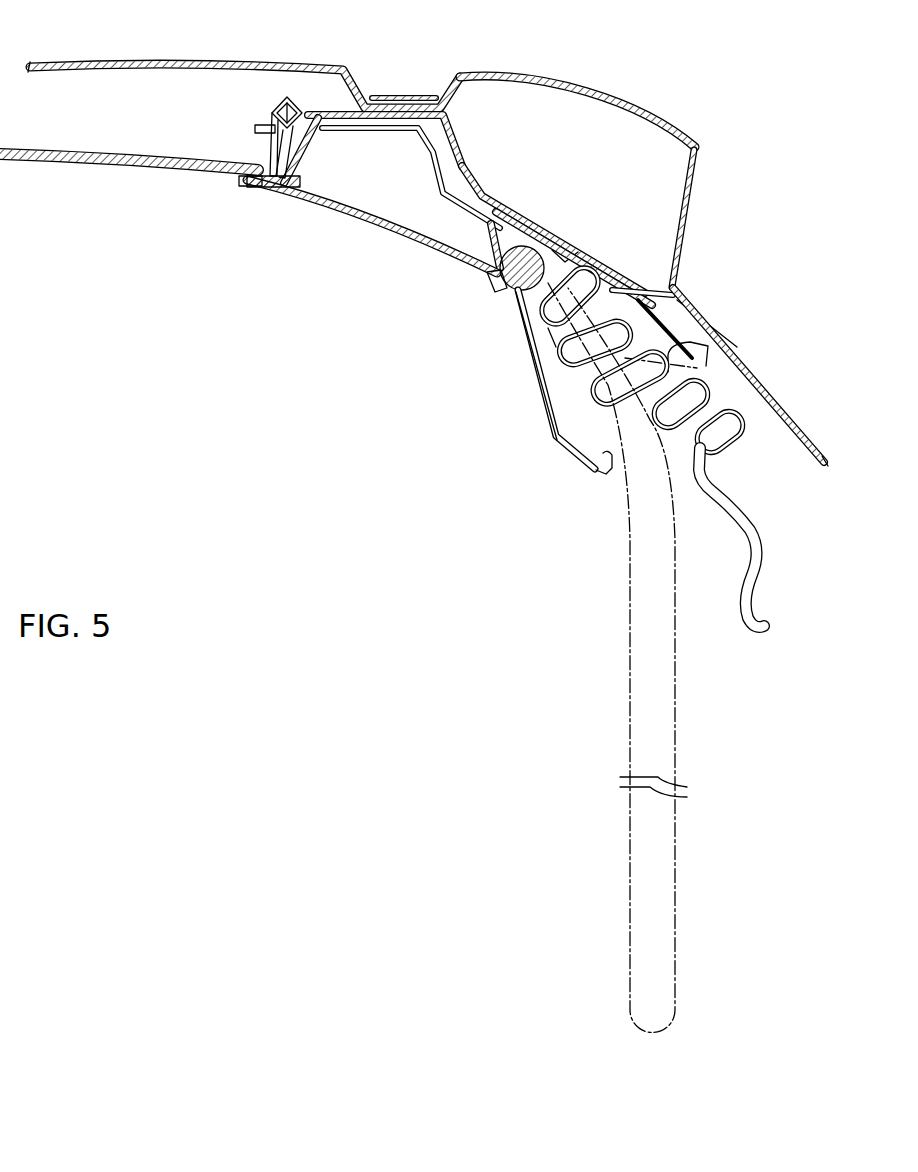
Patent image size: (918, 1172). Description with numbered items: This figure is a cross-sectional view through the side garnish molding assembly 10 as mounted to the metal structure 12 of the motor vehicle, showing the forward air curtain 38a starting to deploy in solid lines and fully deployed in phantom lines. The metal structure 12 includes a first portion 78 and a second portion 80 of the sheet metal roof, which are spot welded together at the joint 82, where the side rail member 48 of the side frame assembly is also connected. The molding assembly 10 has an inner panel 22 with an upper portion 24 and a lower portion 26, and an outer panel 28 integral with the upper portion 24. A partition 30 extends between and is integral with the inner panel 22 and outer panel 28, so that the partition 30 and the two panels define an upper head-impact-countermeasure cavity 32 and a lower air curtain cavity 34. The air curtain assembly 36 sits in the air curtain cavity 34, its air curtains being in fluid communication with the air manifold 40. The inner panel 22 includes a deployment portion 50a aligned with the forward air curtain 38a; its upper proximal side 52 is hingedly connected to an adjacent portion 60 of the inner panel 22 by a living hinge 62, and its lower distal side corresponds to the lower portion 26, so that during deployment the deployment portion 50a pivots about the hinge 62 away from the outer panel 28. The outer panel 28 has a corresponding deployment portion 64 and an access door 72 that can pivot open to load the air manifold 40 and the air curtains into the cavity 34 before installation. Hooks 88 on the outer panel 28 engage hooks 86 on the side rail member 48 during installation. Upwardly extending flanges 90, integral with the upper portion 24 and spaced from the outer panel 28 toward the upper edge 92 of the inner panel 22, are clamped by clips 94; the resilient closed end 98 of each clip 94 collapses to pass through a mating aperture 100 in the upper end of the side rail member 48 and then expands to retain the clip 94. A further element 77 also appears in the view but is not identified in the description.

The side garnish molding assembly 10 is at (316, 390).
The metal structure 12 is at (670, 110).
The inner panel 22 is at (386, 218).
The upper portion 24 is at (263, 192).
The lower portion 26 is at (604, 480).
The outer panel 28 is at (450, 133).
The partition 30 is at (487, 240).
The head-impact-countermeasure cavity 32 is at (382, 179).
The air curtain cavity 34 is at (715, 330).
The air curtain assembly 36 is at (578, 358).
The forward air curtain 38a is at (760, 506).
The air manifold 40 is at (493, 287).
The side rail member 48 is at (470, 166).
The deployment portion 50a is at (570, 457).
The proximal side 52 is at (558, 337).
The adjacent portion 60 is at (512, 288).
The hinge 62 is at (524, 300).
The deployment portion 64 is at (556, 248).
The access door 72 is at (638, 282).
The lower panel 77 is at (95, 150).
The first portion of sheet metal roof 78 is at (152, 63).
The second portion of sheet metal roof 80 is at (515, 75).
The joint 82 is at (434, 78).
The hooks 86 is at (698, 302).
The hooks 88 is at (592, 252).
The flanges 90 is at (262, 148).
The upper edge 92 is at (243, 186).
The clips 94 is at (271, 100).
The closed end 98 is at (268, 108).
The aperture 100 is at (292, 98).